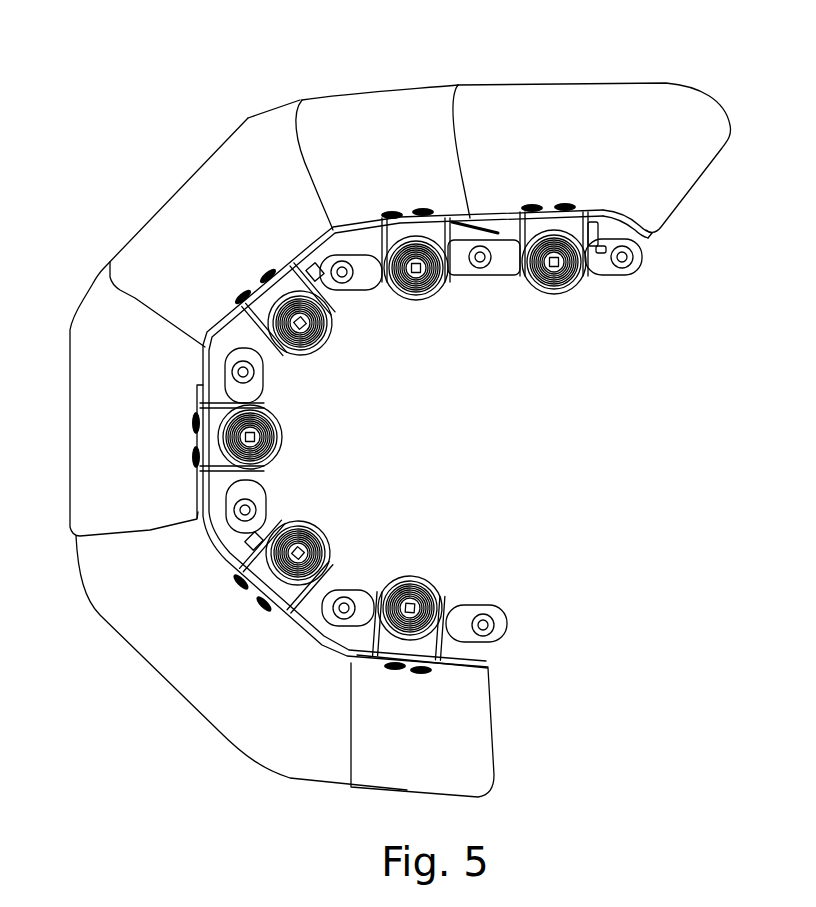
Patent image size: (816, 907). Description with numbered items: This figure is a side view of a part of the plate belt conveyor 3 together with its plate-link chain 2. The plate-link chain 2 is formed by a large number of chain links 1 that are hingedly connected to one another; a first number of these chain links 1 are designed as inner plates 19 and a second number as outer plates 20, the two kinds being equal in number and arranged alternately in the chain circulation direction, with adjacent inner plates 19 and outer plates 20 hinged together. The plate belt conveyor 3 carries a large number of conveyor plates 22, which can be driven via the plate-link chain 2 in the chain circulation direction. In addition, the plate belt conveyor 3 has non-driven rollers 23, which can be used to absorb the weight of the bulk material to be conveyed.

The chain link 1 is at (433, 440).
The plate-link chain 2 is at (630, 292).
The plate belt conveyor 3 is at (721, 85).
The inner plate 19 is at (510, 266).
The outer plate 20 is at (365, 278).
The conveyor plate 22 is at (408, 215).
The non-driven roller 23 is at (414, 274).